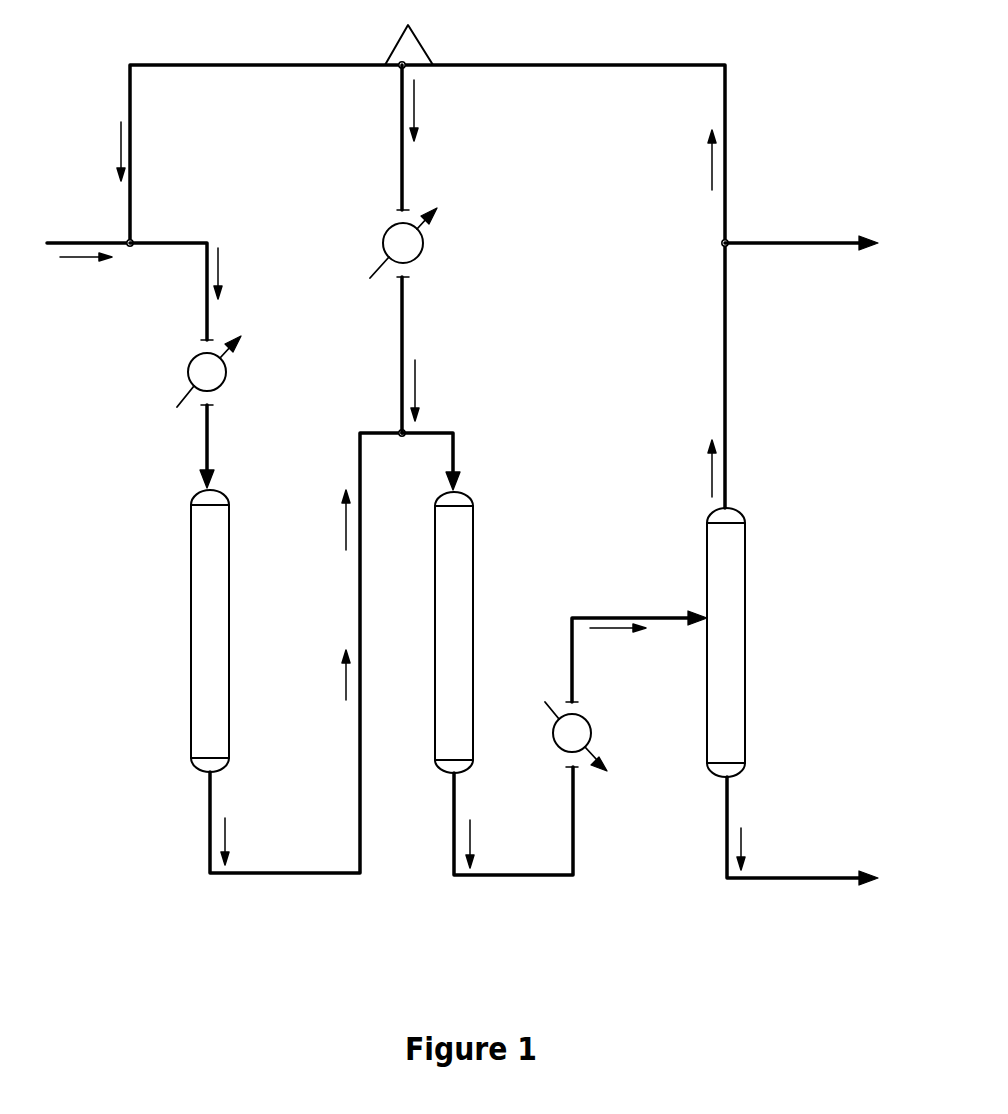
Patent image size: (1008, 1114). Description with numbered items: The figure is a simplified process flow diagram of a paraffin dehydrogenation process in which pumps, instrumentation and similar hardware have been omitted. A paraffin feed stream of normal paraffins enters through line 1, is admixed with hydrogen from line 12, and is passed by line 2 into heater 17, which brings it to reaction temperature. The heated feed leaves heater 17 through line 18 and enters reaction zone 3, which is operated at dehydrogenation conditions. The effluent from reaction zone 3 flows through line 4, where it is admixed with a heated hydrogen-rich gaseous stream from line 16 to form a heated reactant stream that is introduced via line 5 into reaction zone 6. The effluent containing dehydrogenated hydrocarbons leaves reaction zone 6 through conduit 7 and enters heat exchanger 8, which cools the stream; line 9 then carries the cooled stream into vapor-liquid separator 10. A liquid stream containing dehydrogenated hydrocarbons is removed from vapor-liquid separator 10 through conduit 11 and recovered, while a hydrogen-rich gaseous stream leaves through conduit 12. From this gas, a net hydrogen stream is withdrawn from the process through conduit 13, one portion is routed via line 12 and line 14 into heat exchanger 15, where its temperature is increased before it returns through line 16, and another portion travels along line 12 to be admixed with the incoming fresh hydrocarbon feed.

The line 1 is at (88, 219).
The line 2 is at (168, 291).
The reaction zone 3 is at (189, 631).
The line 4 is at (289, 628).
The line 5 is at (451, 456).
The reaction zone 6 is at (476, 632).
The conduit 7 is at (494, 821).
The heat exchanger 8 is at (584, 728).
The line 9 is at (639, 637).
The vapor-liquid separator 10 is at (753, 642).
The conduit 11 is at (777, 831).
The conduit 12 is at (454, 260).
The conduit 13 is at (801, 225).
The line 14 is at (378, 137).
The heat exchanger 15 is at (384, 234).
The line 16 is at (378, 355).
The heater 17 is at (190, 362).
The line 18 is at (183, 446).